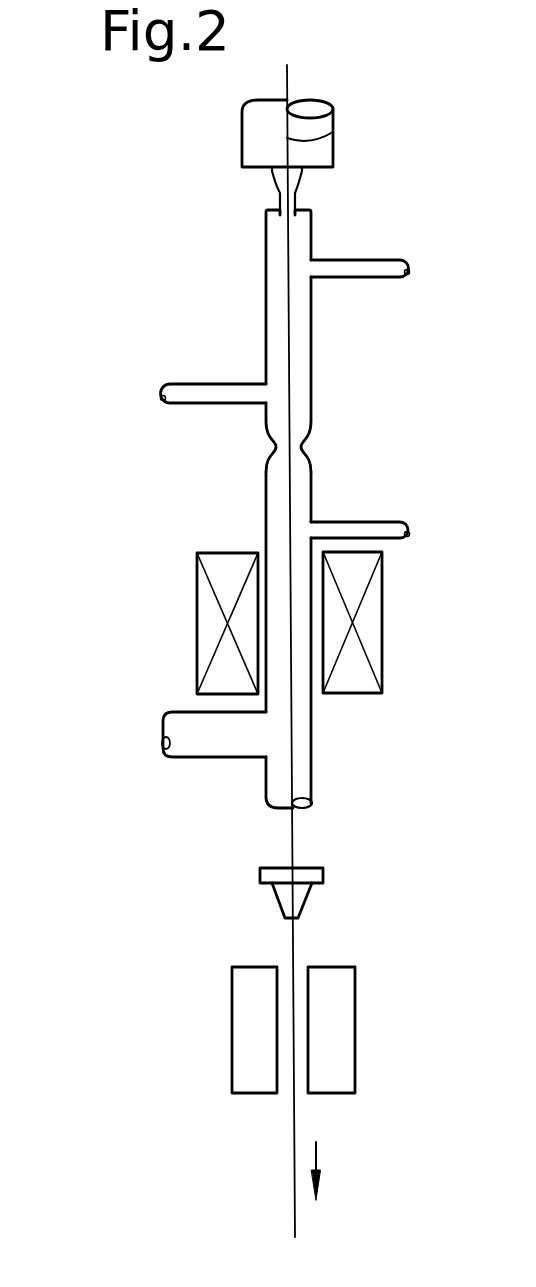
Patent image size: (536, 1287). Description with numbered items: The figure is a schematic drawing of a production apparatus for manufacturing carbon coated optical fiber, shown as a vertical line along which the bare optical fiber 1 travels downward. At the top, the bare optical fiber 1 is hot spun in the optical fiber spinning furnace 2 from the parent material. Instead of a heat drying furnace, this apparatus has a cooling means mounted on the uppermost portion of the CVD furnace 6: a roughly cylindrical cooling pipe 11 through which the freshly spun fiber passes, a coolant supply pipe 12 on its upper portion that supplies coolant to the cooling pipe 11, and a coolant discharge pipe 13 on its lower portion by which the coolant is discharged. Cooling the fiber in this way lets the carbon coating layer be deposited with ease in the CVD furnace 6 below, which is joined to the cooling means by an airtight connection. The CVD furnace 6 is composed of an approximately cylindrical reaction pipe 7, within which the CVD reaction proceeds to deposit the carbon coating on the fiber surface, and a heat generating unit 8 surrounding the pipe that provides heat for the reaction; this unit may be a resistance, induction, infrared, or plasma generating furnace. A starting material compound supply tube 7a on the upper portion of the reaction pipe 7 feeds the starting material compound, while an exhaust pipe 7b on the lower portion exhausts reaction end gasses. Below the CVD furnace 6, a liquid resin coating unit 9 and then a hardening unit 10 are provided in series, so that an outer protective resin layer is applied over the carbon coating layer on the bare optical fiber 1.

The bare optical fiber 1 is at (333, 135).
The optical fiber spinning furnace 2 is at (241, 143).
The CVD furnace 6 is at (97, 514).
The reaction pipe 7 is at (266, 519).
The starting material compound supply tube 7a is at (383, 522).
The exhaust pipe 7b is at (221, 757).
The heat generating unit 8 is at (197, 610).
The liquid resin coating unit 9 is at (310, 897).
The hardening unit 10 is at (343, 1002).
The cooling pipe 11 is at (312, 325).
The coolant supply pipe 12 is at (381, 260).
The coolant discharge pipe 13 is at (193, 384).